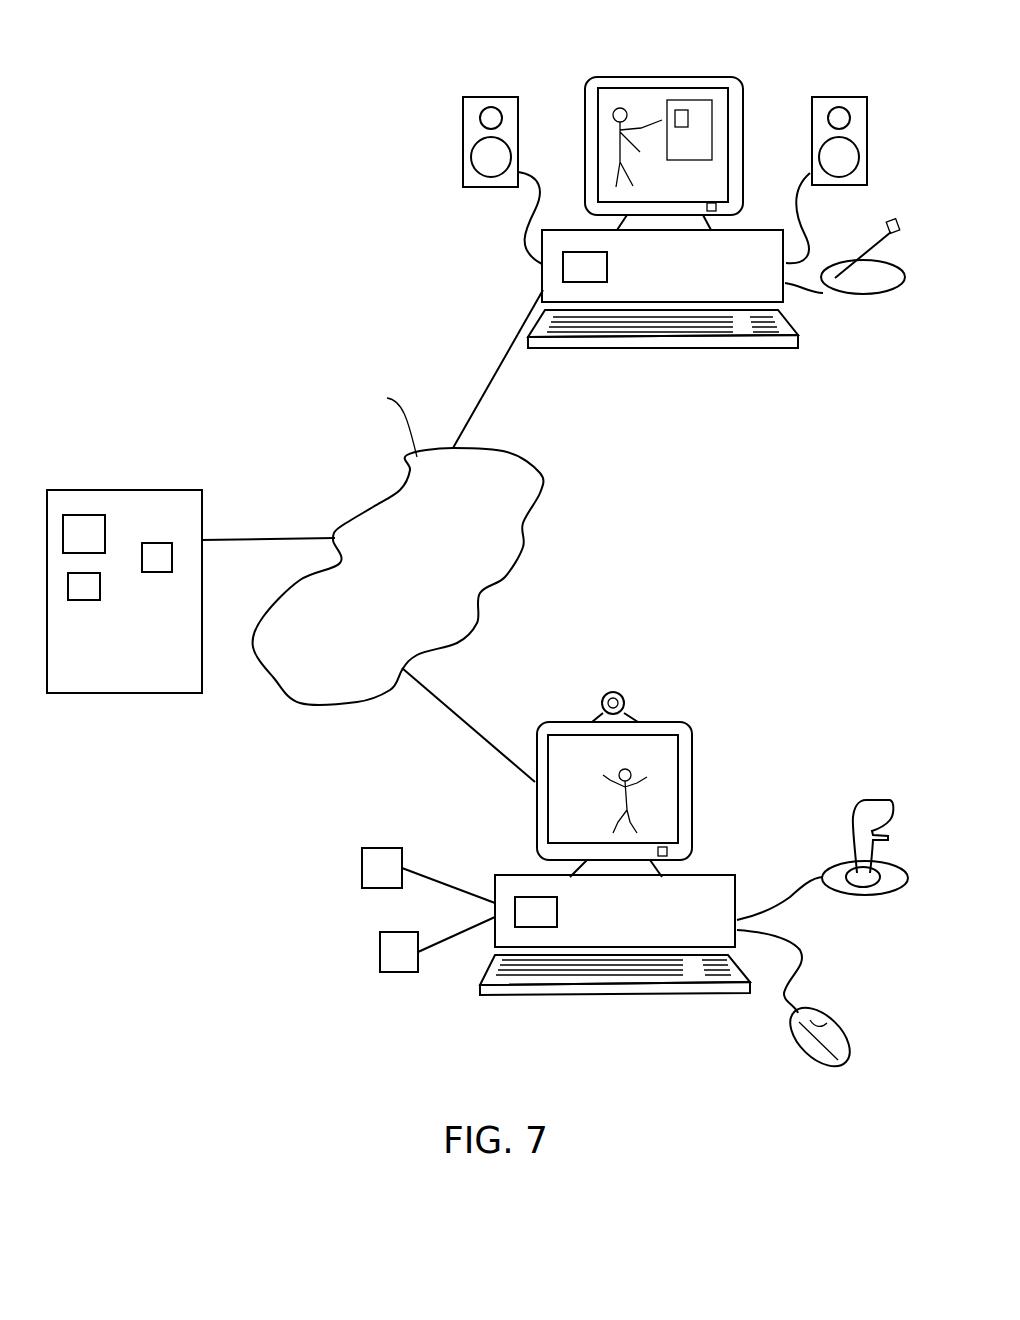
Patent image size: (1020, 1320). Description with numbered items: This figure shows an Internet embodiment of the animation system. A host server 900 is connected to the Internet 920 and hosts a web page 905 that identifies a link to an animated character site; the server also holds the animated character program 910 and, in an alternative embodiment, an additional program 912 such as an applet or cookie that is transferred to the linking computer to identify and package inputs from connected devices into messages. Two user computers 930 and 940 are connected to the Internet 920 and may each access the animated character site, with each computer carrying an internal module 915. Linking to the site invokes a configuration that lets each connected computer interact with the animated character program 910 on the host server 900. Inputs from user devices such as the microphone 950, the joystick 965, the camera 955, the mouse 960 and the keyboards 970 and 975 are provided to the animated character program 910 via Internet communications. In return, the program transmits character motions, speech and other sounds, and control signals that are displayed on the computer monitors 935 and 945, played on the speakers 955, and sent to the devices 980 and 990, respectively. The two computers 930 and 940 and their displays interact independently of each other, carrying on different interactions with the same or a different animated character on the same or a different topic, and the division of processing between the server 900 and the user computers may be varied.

The host server 900 is at (143, 681).
The web page 905 is at (153, 558).
The animated character program 910 is at (98, 532).
The additional program 912 is at (87, 590).
The client module 915 is at (595, 265).
The Internet 920 is at (423, 596).
The computer 930 is at (693, 928).
The computer monitor 935 is at (693, 786).
The computer 940 is at (743, 282).
The computer monitor 945 is at (687, 75).
The microphone 950 is at (898, 222).
The camera / speakers 955 is at (492, 97).
The mouse 960 is at (838, 1037).
The joystick 965 is at (857, 807).
The keyboard 970 is at (640, 987).
The keyboard 975 is at (705, 340).
The device 980 is at (388, 947).
The device 990 is at (377, 868).